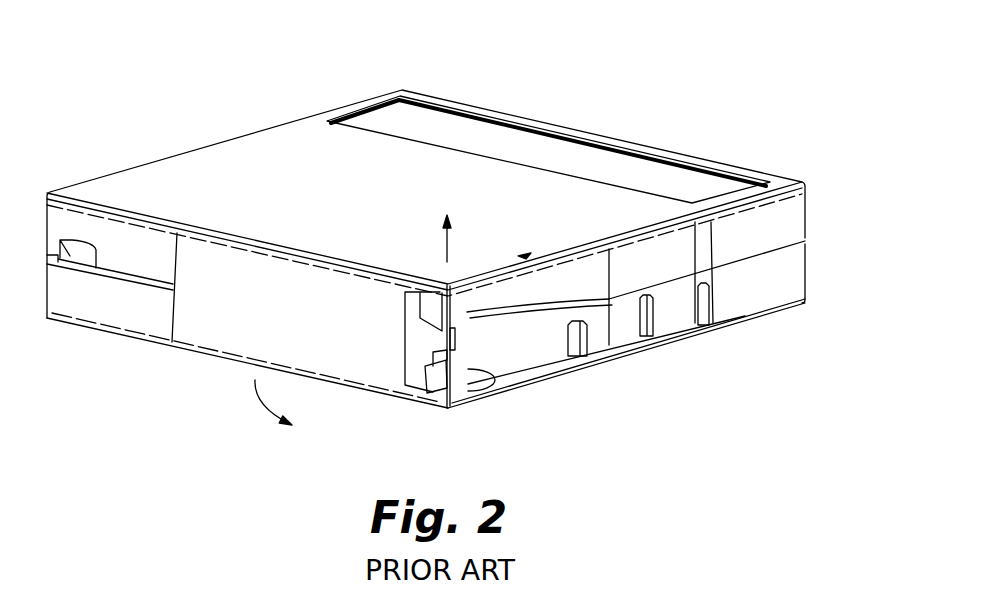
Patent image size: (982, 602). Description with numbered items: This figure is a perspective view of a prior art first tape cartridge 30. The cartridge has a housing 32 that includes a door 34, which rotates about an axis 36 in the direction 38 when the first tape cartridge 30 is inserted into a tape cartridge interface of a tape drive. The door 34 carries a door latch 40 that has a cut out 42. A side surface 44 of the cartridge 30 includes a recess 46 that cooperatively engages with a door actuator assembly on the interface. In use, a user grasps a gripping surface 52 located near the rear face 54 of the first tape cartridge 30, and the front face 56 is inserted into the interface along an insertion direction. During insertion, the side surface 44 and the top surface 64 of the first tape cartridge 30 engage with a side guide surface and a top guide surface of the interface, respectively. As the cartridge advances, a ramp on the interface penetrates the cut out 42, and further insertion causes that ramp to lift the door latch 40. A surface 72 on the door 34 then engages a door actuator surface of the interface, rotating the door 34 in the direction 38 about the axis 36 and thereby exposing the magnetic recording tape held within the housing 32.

The first tape cartridge 30 is at (598, 75).
The housing 32 is at (107, 186).
The door 34 is at (223, 338).
The axis 36 is at (443, 254).
The direction 38 is at (260, 404).
The door latch 40 is at (438, 340).
The cut out 42 is at (435, 363).
The side surface 44 is at (760, 303).
The recess 46 is at (677, 313).
The gripping surface 52 is at (653, 165).
The rear face 54 is at (473, 108).
The front face 56 is at (90, 312).
The top surface 64 is at (330, 204).
The surface 72 is at (450, 306).